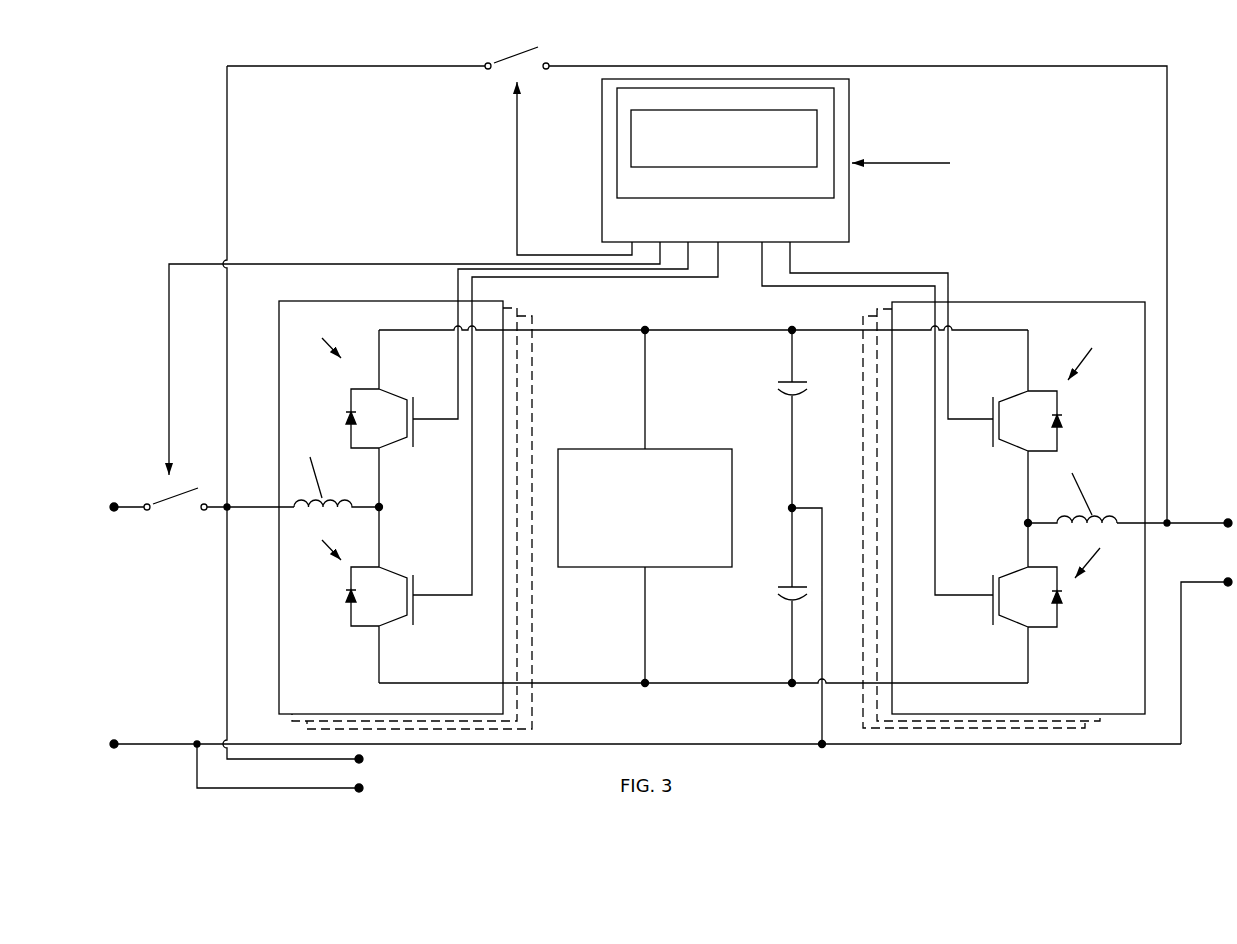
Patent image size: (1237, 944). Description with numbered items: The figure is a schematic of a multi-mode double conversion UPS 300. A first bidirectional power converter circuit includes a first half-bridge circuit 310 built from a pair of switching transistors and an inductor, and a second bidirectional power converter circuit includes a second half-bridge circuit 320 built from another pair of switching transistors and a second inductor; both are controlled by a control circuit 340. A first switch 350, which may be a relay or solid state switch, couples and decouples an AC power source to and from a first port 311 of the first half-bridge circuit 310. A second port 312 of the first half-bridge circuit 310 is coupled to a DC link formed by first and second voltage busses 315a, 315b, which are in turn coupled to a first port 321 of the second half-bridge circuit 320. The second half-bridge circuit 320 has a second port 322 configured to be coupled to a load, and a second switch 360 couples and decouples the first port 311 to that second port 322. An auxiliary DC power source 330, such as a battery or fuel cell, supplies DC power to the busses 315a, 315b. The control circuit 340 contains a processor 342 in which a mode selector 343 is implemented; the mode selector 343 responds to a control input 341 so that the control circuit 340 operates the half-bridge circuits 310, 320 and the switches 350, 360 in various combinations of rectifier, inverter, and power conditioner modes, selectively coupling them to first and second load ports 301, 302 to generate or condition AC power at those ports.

The multi-mode double conversion UPS 300 is at (212, 119).
The first load port 301 is at (1208, 557).
The second load port 302 is at (373, 775).
The first half-bridge circuit 310 is at (390, 300).
The first port of the first half-bridge circuit 311 is at (197, 574).
The second port of the first half-bridge circuit 312 is at (574, 321).
The first voltage bus 315a is at (602, 333).
The second voltage bus 315b is at (622, 680).
The second half-bridge circuit 320 is at (1020, 300).
The first port of the second half-bridge circuit 321 is at (811, 319).
The second port of the second half-bridge circuit 322 is at (1123, 479).
The auxiliary DC power source 330 is at (618, 448).
The control circuit 340 is at (851, 213).
The control input 341 is at (893, 162).
The processor 342 is at (665, 200).
The mode selector 343 is at (720, 111).
The first switch 350 is at (168, 526).
The second switch 360 is at (486, 97).